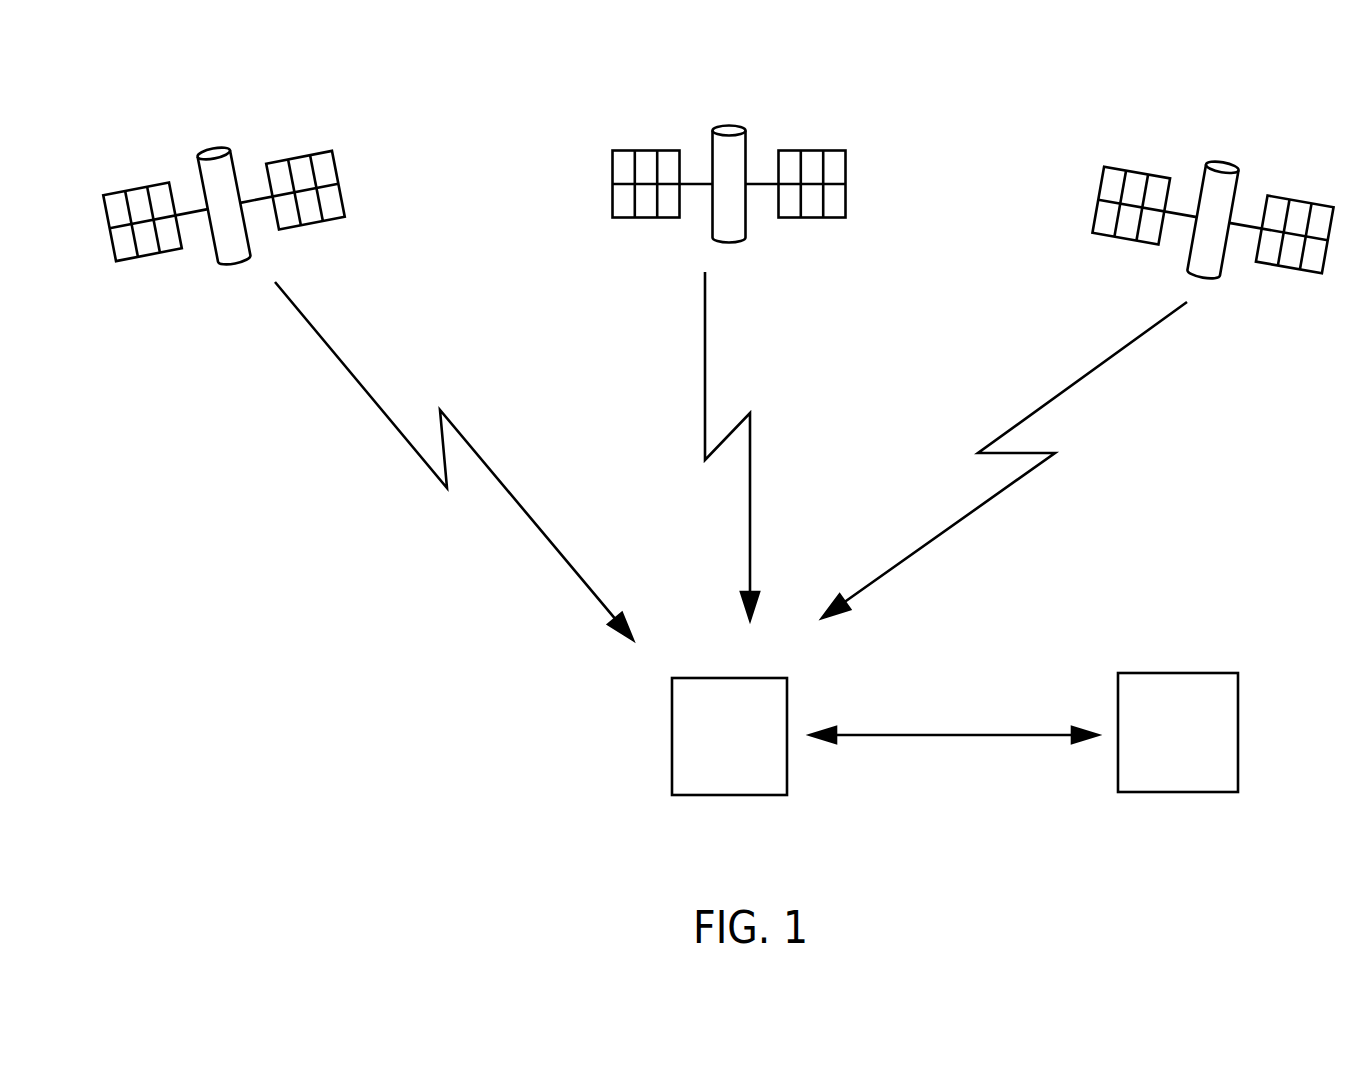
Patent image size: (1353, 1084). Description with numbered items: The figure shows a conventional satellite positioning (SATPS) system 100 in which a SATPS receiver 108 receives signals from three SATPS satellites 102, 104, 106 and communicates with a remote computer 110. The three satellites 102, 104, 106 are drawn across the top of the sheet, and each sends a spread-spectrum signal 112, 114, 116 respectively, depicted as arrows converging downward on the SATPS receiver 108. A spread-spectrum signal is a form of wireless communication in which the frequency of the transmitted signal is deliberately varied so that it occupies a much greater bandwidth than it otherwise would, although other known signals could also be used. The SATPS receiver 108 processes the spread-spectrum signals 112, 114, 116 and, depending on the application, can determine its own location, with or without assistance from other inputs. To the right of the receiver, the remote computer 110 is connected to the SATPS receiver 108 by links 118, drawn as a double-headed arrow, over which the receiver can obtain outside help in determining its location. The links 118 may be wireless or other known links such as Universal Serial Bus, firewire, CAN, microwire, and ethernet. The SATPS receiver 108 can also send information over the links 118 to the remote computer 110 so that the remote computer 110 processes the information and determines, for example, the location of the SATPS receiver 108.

The SATPS system 100 is at (207, 116).
The SATPS satellite 102 is at (337, 187).
The SATPS satellite 104 is at (845, 175).
The SATPS satellite 106 is at (1237, 177).
The SATPS receiver 108 is at (750, 751).
The remote computer 110 is at (1202, 750).
The spread-spectrum signal 112 is at (453, 423).
The spread-spectrum signal 114 is at (752, 410).
The spread-spectrum signal 116 is at (1057, 452).
The links 118 is at (913, 735).